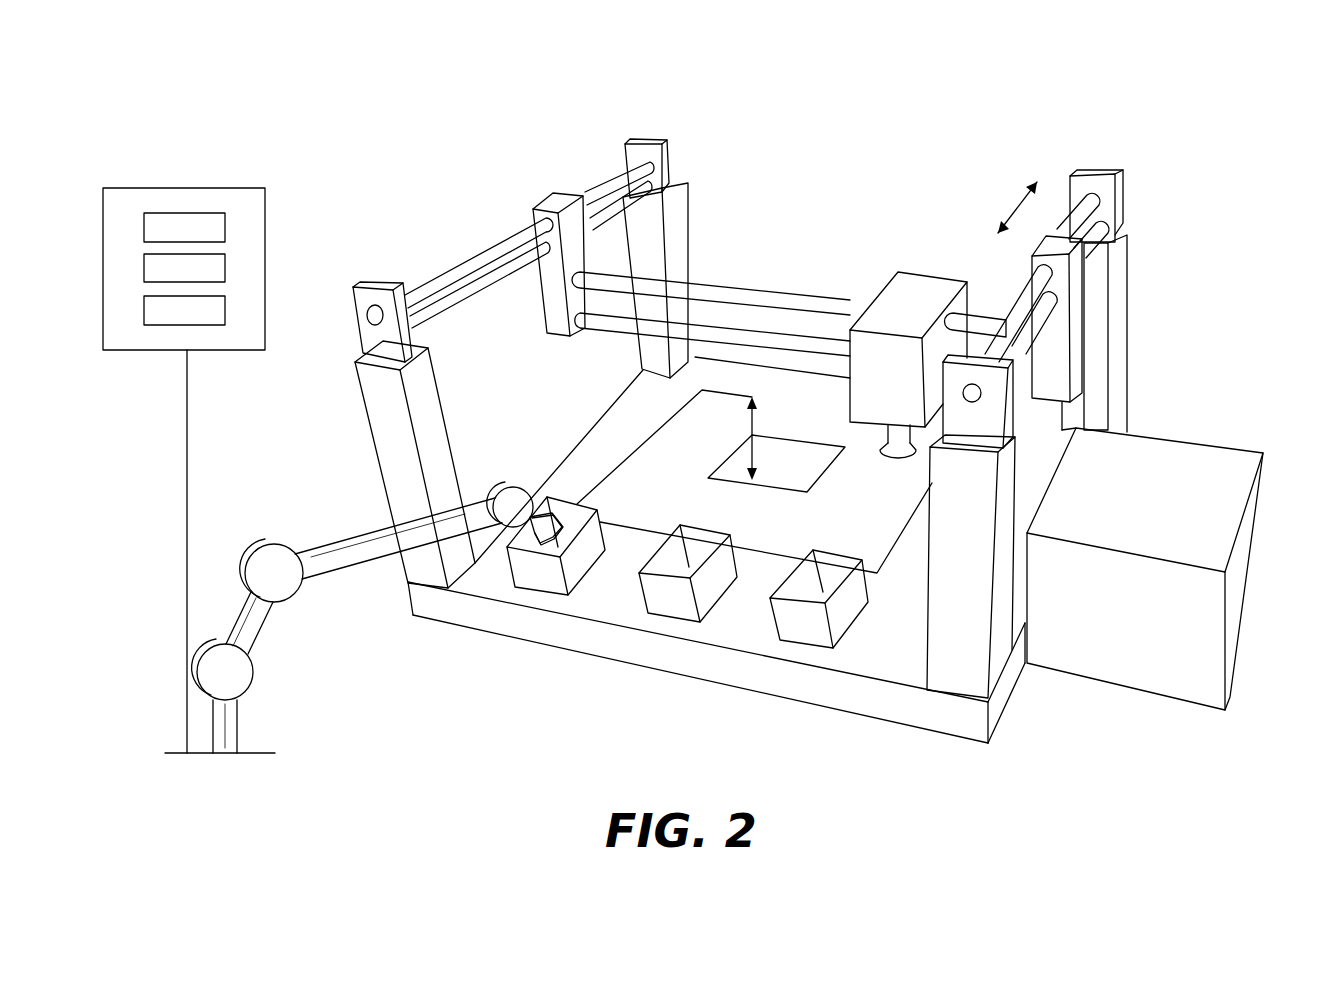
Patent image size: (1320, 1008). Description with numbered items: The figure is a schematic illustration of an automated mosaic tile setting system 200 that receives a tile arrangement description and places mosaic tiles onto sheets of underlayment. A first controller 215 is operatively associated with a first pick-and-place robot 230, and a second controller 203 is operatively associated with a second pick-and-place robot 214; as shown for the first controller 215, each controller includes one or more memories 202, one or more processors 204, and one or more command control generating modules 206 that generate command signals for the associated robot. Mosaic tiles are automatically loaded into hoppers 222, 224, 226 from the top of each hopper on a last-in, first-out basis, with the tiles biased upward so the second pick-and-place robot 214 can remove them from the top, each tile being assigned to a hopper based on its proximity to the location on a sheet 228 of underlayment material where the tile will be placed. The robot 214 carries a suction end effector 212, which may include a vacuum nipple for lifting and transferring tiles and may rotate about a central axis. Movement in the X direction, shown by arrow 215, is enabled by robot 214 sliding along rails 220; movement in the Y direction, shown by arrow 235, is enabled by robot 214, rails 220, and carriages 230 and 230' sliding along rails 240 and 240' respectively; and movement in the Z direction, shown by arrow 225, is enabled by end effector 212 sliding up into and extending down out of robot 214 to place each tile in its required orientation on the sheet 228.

The automated mosaic tile setting system 200 is at (1136, 104).
The memory 202 is at (212, 230).
The second controller 203 is at (1192, 482).
The processor 204 is at (212, 273).
The command control generating module 206 is at (212, 313).
The end effector 212 is at (880, 438).
The second pick-and-place robot 214 is at (917, 293).
The first controller 215 is at (186, 193).
The rails 220 is at (718, 335).
The hopper 222 is at (540, 579).
The hopper 224 is at (678, 602).
The arrow 225 is at (752, 450).
The hopper 226 is at (812, 622).
The sheet 228 is at (671, 493).
The first pick-and-place robot 230 is at (700, 491).
The carriage 230' is at (536, 232).
The arrow 235 is at (1010, 210).
The rails 240 is at (1058, 320).
The rails 240' is at (524, 245).